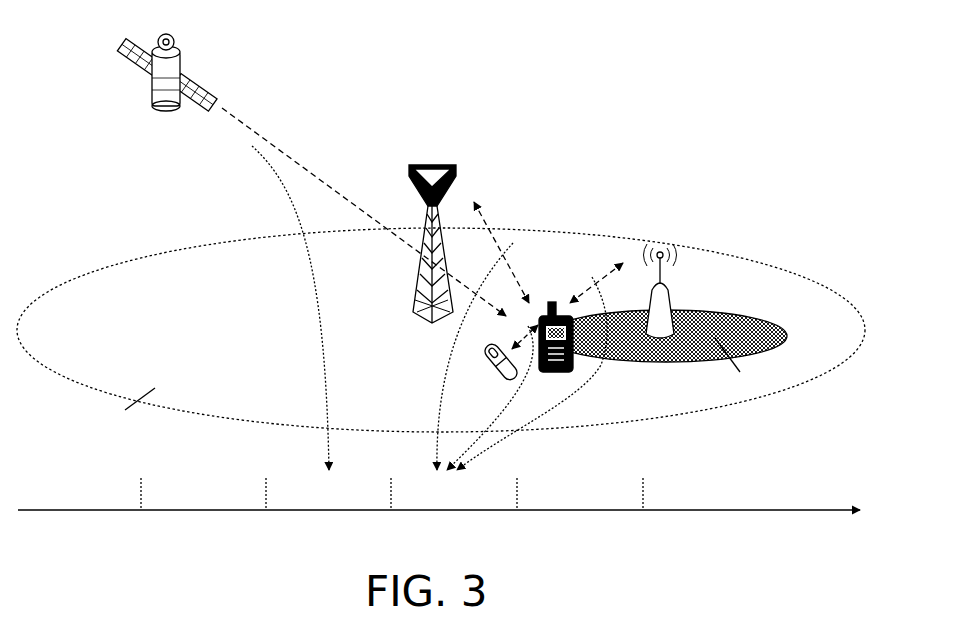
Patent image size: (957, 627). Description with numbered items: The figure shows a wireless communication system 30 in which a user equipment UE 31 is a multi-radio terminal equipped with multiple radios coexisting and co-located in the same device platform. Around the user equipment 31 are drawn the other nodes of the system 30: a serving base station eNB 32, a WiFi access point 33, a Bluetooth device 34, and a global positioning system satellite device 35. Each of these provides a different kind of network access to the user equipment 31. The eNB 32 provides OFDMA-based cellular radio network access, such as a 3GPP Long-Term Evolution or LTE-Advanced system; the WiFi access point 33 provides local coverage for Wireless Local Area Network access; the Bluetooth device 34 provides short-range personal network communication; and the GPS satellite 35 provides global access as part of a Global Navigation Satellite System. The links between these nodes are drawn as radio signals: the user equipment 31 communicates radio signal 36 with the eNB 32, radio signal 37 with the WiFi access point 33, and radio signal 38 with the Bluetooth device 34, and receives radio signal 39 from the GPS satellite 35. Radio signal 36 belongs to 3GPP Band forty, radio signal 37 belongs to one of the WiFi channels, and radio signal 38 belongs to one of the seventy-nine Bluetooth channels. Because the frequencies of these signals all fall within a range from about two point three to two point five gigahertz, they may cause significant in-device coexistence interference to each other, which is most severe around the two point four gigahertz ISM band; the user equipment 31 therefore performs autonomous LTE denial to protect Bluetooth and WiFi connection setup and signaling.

The wireless communication system 30 is at (804, 60).
The user equipment 31 is at (548, 375).
The serving base station (eNB) 32 is at (430, 163).
The WiFi access point 33 is at (660, 246).
The Bluetooth device 34 is at (488, 368).
The global positioning system satellite device 35 is at (166, 113).
The radio signal 36 is at (513, 243).
The radio signal 37 is at (592, 277).
The radio signal 38 is at (528, 327).
The radio signal 39 is at (256, 154).